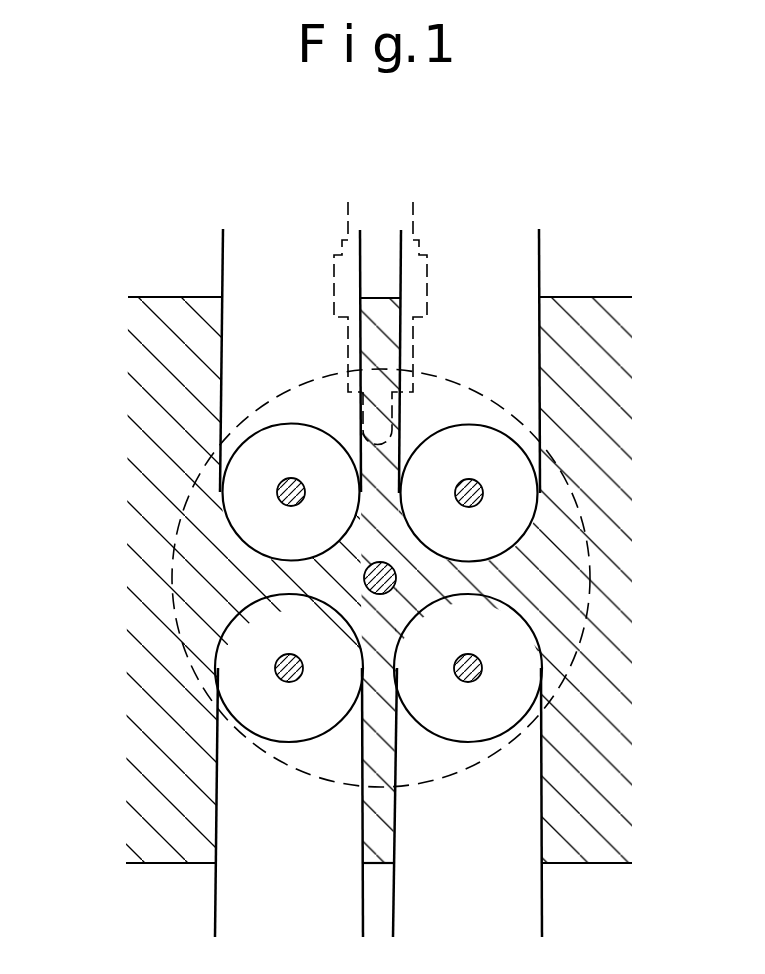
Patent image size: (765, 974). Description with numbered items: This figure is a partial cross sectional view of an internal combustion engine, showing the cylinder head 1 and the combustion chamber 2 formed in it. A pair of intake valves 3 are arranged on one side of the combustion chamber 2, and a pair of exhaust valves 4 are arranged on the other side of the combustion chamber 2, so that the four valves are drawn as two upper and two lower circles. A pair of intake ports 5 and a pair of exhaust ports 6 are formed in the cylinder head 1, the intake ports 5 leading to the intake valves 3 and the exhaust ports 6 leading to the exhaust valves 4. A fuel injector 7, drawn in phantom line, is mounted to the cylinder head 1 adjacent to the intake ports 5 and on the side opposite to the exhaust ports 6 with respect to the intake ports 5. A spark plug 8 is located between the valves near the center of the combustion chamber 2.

The cylinder head 1 is at (585, 722).
The combustion chamber 2 is at (592, 560).
The intake valves 3 is at (233, 481).
The exhaust valves 4 is at (233, 659).
The intake ports 5 is at (222, 349).
The exhaust ports 6 is at (230, 790).
The fuel injector 7 is at (408, 222).
The spark plug 8 is at (364, 580).